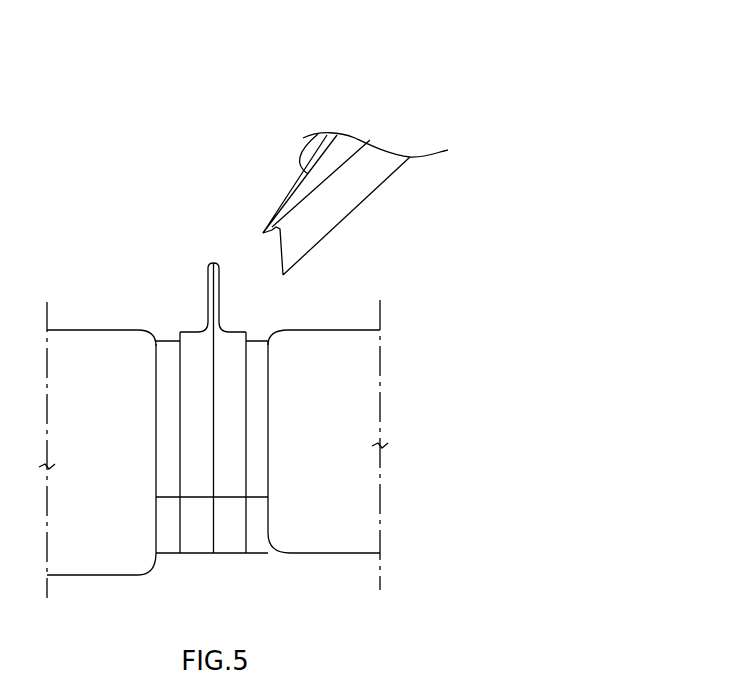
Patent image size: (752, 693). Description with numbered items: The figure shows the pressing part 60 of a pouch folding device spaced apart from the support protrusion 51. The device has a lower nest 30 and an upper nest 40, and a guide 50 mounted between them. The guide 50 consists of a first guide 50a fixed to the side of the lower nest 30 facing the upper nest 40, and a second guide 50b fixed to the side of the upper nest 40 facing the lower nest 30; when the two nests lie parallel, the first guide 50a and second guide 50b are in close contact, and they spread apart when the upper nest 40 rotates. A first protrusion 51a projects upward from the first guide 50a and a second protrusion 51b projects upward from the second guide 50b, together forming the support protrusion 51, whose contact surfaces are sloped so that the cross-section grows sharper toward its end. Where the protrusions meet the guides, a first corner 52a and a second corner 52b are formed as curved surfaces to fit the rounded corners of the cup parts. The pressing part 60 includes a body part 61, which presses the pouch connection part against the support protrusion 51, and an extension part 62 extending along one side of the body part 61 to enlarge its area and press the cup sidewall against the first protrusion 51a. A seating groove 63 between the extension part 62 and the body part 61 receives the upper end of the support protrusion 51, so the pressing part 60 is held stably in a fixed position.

The lower nest 30 is at (336, 340).
The upper nest 40 is at (83, 340).
The guide 50 is at (212, 449).
The first guide 50a is at (235, 485).
The second guide 50b is at (193, 488).
The support protrusion 51 is at (196, 237).
The first protrusion 51a is at (222, 287).
The second protrusion 51b is at (205, 287).
The first corner 52a is at (223, 332).
The second corner 52b is at (202, 329).
The pressing part 60 is at (342, 158).
The body part 61 is at (305, 142).
The extension part 62 is at (362, 170).
The seating groove 63 is at (265, 237).